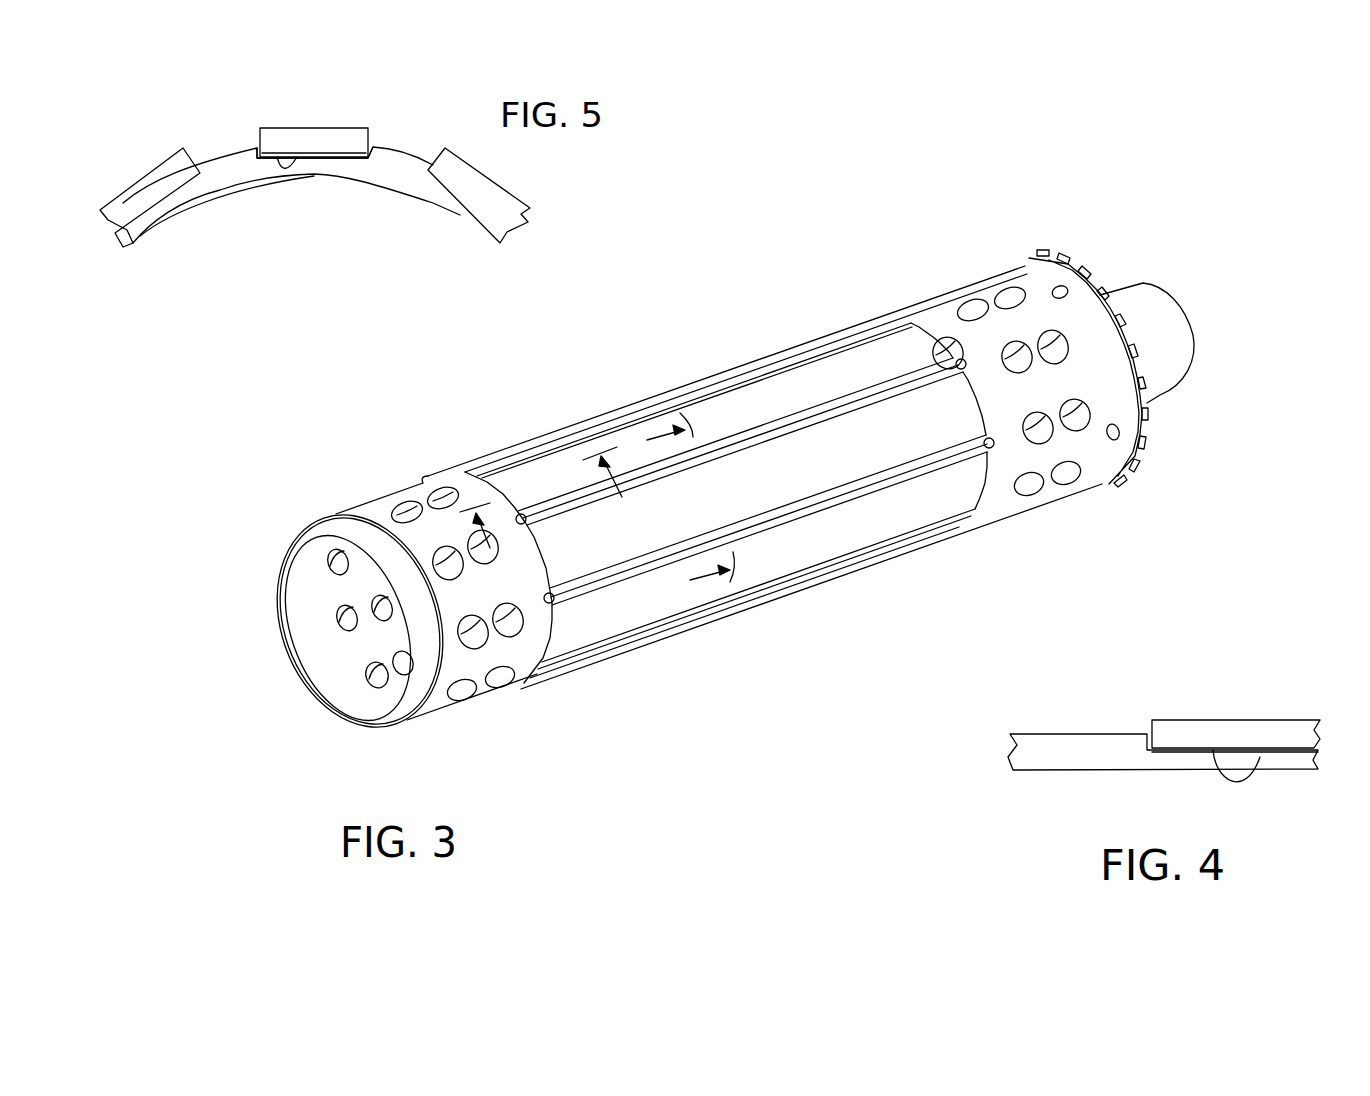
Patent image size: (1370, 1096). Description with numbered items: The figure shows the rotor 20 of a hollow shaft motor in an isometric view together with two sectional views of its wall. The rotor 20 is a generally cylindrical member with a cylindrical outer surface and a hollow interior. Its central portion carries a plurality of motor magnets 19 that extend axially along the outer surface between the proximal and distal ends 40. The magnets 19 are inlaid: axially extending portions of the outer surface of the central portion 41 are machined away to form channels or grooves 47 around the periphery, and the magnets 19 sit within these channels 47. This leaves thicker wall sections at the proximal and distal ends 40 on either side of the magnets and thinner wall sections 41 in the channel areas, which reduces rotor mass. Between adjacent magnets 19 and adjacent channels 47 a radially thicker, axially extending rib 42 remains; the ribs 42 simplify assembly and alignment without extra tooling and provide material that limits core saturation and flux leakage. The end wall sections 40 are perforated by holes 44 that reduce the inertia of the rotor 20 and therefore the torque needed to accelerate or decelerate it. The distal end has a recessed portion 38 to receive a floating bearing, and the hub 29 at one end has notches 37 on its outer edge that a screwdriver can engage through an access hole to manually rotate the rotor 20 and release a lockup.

In FIG. 3, the motor magnets 19 is at (583, 555).
In FIG. 4, the motor magnets 19 is at (1197, 735).
In FIG. 5, the motor magnets 19 is at (128, 207).
In FIG. 3, the rotor 20 is at (437, 444).
In FIG. 3, the hub 29 is at (1178, 343).
In FIG. 3, the notches 37 is at (1052, 263).
In FIG. 3, the recessed portion 38 is at (426, 673).
In FIG. 3, the proximal and distal ends 40 is at (378, 512).
In FIG. 4, the proximal and distal ends 40 is at (1112, 748).
In FIG. 5, the proximal and distal ends 40 is at (223, 187).
In FIG. 4, the thinner wall sections 41 is at (1282, 762).
In FIG. 5, the thinner wall sections 41 is at (320, 165).
In FIG. 3, the ribs 42 is at (808, 422).
In FIG. 5, the ribs 42 is at (228, 150).
In FIG. 3, the holes 44 is at (340, 617).
In FIG. 4, the channels or grooves 47 is at (1240, 775).
In FIG. 5, the channels or grooves 47 is at (283, 157).